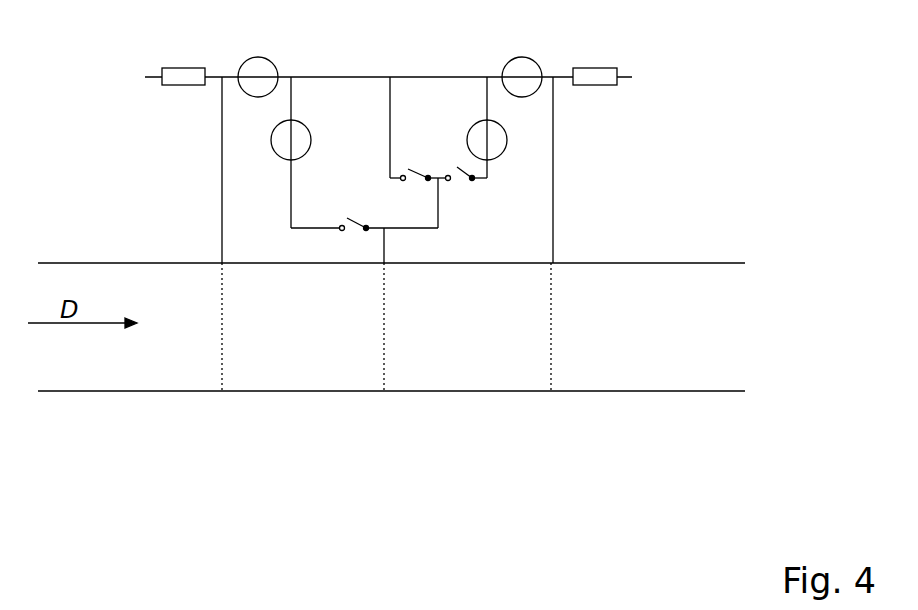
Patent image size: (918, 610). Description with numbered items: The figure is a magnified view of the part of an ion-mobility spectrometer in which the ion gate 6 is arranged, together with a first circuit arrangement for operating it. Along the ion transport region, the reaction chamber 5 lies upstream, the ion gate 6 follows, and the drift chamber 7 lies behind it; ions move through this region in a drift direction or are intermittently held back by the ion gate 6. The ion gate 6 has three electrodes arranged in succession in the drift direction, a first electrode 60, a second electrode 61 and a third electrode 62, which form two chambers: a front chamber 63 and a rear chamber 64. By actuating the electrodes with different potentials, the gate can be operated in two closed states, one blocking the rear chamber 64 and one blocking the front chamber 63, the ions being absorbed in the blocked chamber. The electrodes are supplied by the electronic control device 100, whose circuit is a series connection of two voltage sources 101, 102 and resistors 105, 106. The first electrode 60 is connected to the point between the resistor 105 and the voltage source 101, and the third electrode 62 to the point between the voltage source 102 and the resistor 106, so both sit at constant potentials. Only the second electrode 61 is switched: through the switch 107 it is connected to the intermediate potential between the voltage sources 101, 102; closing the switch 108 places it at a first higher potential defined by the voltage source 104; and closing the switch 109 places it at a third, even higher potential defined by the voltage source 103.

The electronic control device 100 is at (640, 178).
The voltage source 101 is at (270, 61).
The voltage source 102 is at (535, 60).
The voltage source 103 is at (302, 156).
The voltage source 104 is at (500, 155).
The resistor 105 is at (172, 87).
The resistor 106 is at (600, 87).
The switch 107 is at (416, 171).
The switch 108 is at (470, 183).
The switch 109 is at (355, 233).
The reaction chamber 5 is at (146, 372).
The ion gate 6 is at (326, 419).
The drift chamber 7 is at (650, 373).
The first electrode 60 is at (220, 302).
The second electrode 61 is at (388, 368).
The third electrode 62 is at (553, 345).
The front chamber 63 is at (282, 340).
The rear chamber 64 is at (498, 338).